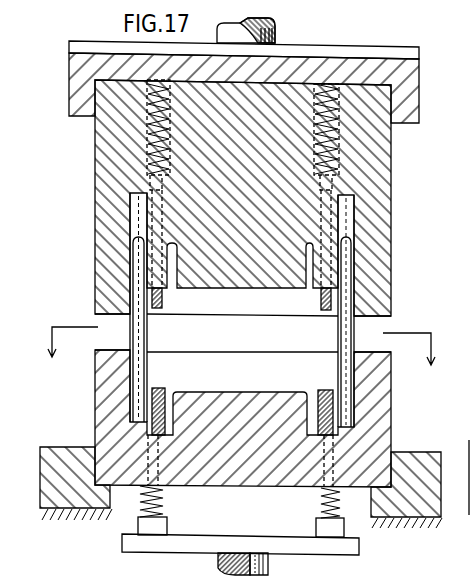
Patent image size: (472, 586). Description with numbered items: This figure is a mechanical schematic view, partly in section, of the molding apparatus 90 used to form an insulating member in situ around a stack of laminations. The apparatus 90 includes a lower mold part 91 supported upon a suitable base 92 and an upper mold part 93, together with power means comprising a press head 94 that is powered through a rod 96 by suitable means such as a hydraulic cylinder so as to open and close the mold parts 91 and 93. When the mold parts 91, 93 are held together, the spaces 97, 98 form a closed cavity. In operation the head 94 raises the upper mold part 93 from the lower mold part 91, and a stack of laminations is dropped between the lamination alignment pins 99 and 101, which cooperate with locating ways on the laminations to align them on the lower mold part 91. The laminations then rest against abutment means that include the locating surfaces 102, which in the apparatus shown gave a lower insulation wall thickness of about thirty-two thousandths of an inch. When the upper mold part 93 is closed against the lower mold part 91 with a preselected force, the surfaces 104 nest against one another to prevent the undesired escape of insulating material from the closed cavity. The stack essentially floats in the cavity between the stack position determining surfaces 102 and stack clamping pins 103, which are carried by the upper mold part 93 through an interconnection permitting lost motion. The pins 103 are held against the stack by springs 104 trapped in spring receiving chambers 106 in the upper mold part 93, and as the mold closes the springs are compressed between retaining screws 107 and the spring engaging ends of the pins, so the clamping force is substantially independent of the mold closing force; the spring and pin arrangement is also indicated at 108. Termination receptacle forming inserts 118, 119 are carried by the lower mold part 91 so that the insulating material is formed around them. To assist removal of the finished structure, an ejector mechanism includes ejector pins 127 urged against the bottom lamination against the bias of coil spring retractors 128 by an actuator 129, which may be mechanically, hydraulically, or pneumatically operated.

The molding apparatus 90 is at (62, 184).
The lower mold part 91 is at (391, 394).
The base 92 is at (58, 447).
The upper mold part 93 is at (391, 208).
The press head 94 is at (419, 90).
The rod 96 is at (275, 31).
The space 97 is at (268, 372).
The space 98 is at (247, 304).
The lamination alignment pin 99 is at (148, 333).
The lamination alignment pin 101 is at (338, 336).
The locating surfaces 102 is at (160, 388).
The stack clamping pins 103 is at (162, 300).
The springs 104 is at (172, 128).
The spring receiving chambers 106 is at (339, 152).
The retaining screws 107 is at (172, 100).
The pin 108 is at (172, 153).
The termination receptacle forming insert 118 is at (163, 437).
The termination receptacle forming insert 119 is at (322, 437).
The ejector pins 127 is at (163, 497).
The coil spring retractors 128 is at (165, 514).
The actuator 129 is at (268, 566).